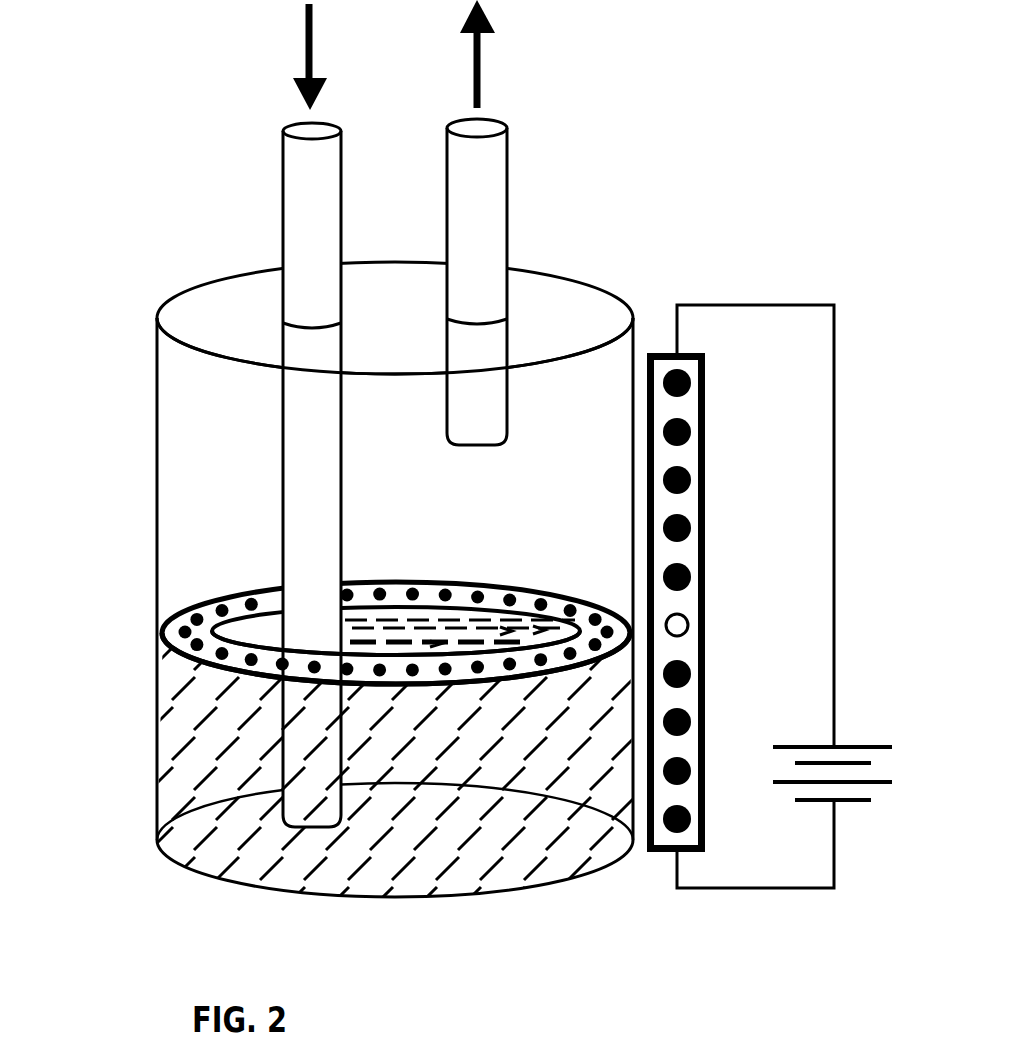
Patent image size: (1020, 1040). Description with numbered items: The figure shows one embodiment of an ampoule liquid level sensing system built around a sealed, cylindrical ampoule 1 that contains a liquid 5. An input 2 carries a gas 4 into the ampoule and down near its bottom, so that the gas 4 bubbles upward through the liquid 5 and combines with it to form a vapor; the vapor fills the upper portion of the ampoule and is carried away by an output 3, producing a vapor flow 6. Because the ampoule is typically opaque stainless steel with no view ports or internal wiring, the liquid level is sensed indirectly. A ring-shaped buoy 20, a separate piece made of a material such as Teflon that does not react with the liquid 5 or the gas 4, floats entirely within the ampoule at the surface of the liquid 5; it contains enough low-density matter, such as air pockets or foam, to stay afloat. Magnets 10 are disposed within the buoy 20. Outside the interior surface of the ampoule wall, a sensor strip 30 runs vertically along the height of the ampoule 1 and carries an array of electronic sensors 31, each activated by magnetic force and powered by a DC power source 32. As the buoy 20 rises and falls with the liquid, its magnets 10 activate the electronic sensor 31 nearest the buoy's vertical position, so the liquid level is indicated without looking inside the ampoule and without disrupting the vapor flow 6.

The ampoule 1 is at (573, 267).
The input 2 is at (324, 193).
The output 3 is at (489, 193).
The gas 4 is at (332, 48).
The liquid 5 is at (190, 770).
The vapor flow 6 is at (502, 57).
The magnets 10 is at (391, 575).
The buoy 20 is at (493, 564).
The sensor strip 30 is at (722, 361).
The electronic sensor 31 is at (697, 614).
The DC power source 32 is at (870, 729).